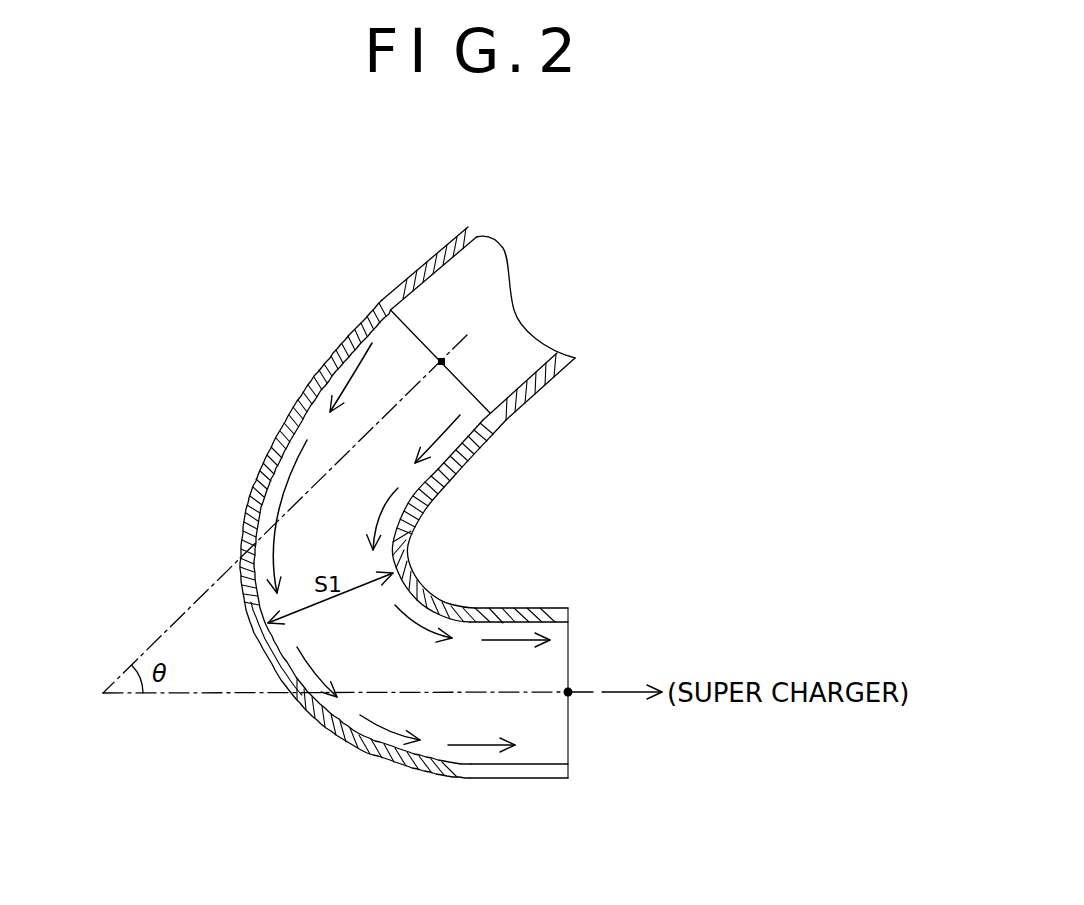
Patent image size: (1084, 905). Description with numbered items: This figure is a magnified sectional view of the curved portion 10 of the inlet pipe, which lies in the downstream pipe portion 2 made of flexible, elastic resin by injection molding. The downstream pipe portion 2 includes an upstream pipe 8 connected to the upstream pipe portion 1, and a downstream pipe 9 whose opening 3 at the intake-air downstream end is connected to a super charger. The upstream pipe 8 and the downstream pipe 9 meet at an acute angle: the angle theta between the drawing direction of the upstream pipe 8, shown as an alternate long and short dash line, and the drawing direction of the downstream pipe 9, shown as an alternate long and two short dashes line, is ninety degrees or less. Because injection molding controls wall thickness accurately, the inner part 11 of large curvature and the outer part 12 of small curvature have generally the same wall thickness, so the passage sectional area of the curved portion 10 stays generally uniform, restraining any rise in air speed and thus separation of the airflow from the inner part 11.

The upstream pipe portion 1 is at (423, 272).
The downstream pipe portion 2 is at (381, 560).
The opening 3 is at (536, 777).
The upstream pipe 8 is at (308, 386).
The downstream pipe 9 is at (427, 773).
The curved portion 10 is at (241, 546).
The inner part 11 is at (415, 570).
The outer part 12 is at (248, 617).